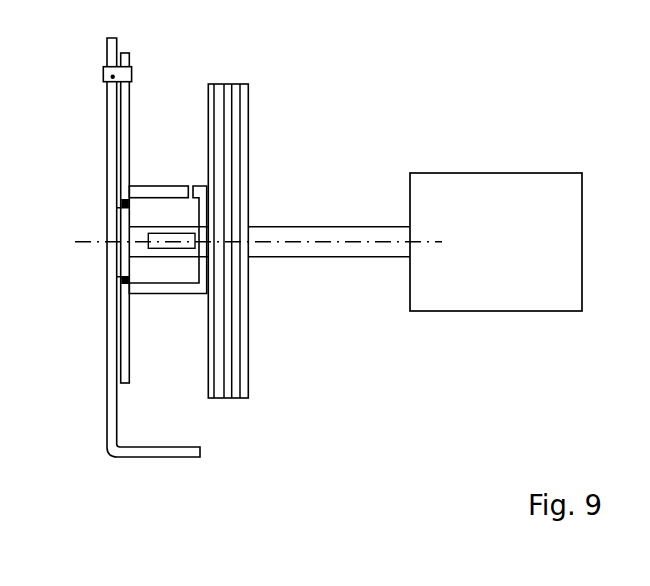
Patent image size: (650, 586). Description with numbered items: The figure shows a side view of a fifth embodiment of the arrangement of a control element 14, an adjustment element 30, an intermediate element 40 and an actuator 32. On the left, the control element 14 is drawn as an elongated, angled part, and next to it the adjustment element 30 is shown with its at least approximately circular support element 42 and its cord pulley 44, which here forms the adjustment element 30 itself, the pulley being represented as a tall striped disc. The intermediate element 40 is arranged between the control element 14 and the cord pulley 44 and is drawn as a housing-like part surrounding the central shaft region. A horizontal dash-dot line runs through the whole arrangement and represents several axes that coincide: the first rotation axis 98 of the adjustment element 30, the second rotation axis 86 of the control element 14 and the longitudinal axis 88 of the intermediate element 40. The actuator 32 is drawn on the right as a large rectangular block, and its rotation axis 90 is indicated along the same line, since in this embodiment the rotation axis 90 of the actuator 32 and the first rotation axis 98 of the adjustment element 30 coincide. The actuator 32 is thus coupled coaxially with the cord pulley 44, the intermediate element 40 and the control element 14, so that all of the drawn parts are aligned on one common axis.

The control element 14 is at (86, 411).
The adjustment element 30 is at (274, 115).
The actuator 32 is at (540, 185).
The intermediate element 40 is at (167, 262).
The support element 42 is at (126, 92).
The cord pulley 44 is at (227, 85).
The second rotation axis 86 is at (242, 272).
The longitudinal axis 88 is at (102, 242).
The rotation axis 90 is at (352, 242).
The first rotation axis 98 is at (228, 243).